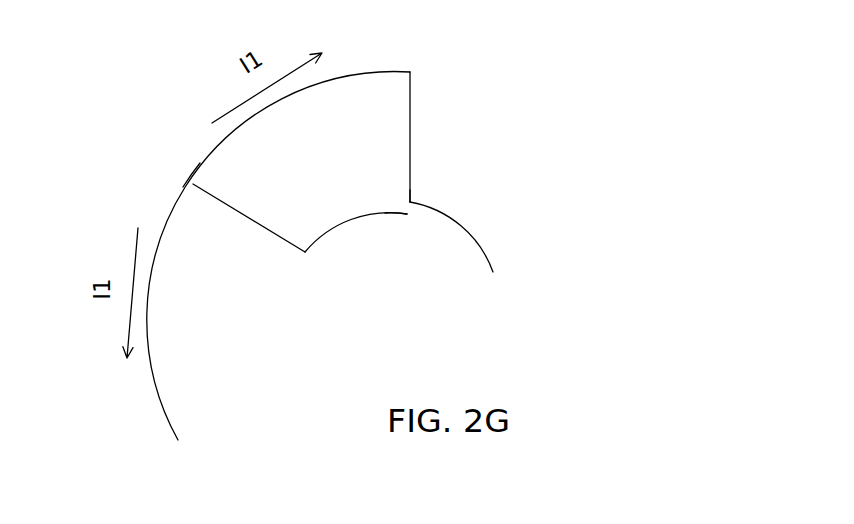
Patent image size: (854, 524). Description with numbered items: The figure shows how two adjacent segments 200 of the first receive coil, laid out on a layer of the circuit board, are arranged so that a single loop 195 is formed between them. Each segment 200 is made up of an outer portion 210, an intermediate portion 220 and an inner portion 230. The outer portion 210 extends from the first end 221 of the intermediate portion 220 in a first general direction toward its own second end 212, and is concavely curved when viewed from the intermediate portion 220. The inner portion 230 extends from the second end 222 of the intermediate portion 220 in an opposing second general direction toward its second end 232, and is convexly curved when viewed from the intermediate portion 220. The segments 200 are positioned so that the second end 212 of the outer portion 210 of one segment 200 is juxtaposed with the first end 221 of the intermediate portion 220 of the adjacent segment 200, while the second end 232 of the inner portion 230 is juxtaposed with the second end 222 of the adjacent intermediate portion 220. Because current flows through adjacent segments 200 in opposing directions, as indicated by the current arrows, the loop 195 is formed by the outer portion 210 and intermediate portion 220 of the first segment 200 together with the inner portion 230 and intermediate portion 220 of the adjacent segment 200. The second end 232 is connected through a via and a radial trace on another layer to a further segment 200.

The loop 195 is at (477, 137).
The segment 200 is at (271, 234).
The outer portion 210 is at (251, 256).
The second end 212 is at (188, 175).
The intermediate portion 220 is at (301, 229).
The first end 221 is at (249, 218).
The second end 222 is at (410, 193).
The inner portion 230 is at (430, 262).
The second end 232 is at (397, 215).